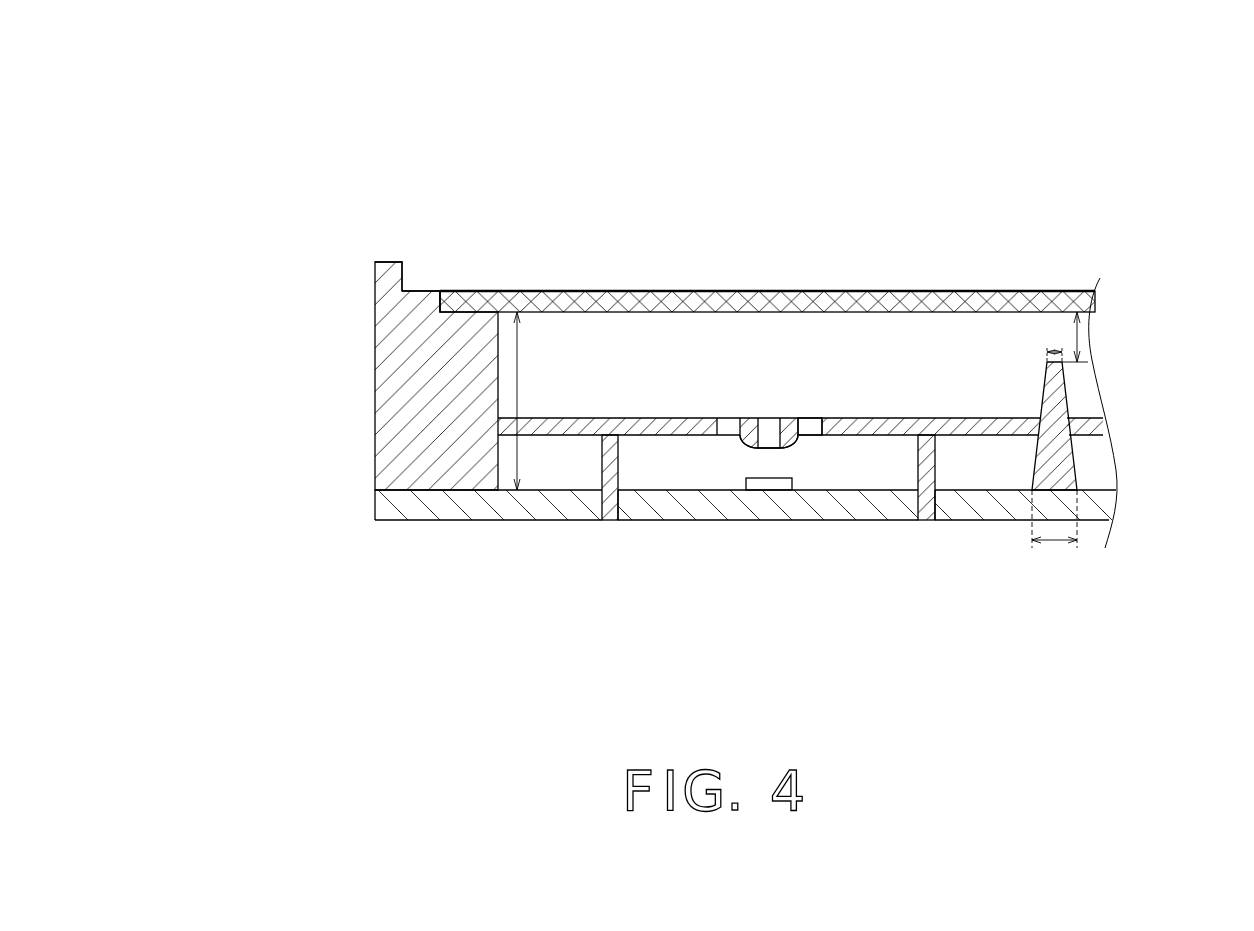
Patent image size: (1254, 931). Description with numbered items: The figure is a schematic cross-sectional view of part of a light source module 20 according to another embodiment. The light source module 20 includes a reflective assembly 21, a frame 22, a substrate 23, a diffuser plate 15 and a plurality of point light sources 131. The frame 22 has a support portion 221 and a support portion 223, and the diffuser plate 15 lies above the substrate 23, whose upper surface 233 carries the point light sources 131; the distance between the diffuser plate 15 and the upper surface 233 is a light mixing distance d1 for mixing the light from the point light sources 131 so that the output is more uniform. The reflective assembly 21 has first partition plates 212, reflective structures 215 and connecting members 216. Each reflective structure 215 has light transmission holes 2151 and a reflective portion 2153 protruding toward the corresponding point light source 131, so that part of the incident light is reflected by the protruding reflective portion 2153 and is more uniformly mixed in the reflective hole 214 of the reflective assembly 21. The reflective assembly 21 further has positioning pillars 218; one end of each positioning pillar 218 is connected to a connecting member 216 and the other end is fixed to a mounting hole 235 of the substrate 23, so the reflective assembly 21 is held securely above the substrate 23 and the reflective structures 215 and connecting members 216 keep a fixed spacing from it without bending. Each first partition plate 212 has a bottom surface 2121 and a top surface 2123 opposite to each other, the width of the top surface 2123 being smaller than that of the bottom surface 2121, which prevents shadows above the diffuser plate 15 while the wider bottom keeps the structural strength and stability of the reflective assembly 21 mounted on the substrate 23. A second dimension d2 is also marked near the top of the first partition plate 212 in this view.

The light source module 20 is at (245, 95).
The reflective assembly 21 is at (577, 417).
The frame 22 is at (403, 373).
The support portion 223 is at (422, 291).
The support portion 221 is at (468, 293).
The diffuser plate 15 is at (632, 291).
The connecting member 216 is at (890, 427).
The reflective structure 215 is at (749, 423).
The light transmission hole 2151 is at (817, 399).
The reflective portion 2153 is at (748, 446).
The positioning pillar 218 is at (937, 450).
The substrate 23 is at (840, 512).
The mounting hole 235 is at (633, 505).
The upper surface 233 is at (878, 476).
The point light source 131 is at (768, 488).
The first partition plate 212 is at (1060, 393).
The top surface 2123 is at (1053, 350).
The bottom surface 2121 is at (1063, 543).
The reflective hole 214 is at (1007, 476).
The light mixing distance d1 is at (517, 462).
The second distance d2 is at (1079, 335).